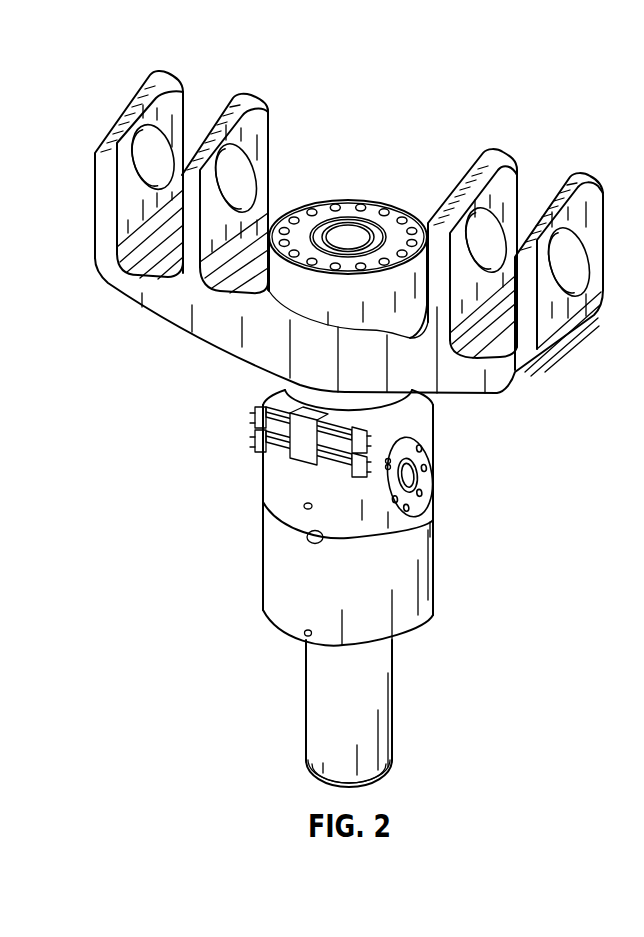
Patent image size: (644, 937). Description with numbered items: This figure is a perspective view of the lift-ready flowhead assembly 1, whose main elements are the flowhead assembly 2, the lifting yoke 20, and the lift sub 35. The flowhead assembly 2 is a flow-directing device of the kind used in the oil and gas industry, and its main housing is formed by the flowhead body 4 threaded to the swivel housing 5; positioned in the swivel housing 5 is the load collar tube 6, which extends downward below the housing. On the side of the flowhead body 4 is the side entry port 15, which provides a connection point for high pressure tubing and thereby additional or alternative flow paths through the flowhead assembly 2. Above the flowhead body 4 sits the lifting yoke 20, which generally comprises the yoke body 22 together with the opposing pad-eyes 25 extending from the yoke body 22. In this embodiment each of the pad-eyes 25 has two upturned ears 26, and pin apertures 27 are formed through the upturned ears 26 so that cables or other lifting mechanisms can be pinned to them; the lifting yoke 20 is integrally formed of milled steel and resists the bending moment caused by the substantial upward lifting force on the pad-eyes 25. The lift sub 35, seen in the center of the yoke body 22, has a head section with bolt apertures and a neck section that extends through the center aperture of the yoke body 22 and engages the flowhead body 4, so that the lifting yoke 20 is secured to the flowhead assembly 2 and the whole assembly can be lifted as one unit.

The lift-ready flowhead assembly 1 is at (472, 472).
The flowhead assembly 2 is at (466, 548).
The flowhead body 4 is at (263, 490).
The swivel housing 5 is at (263, 600).
The load collar tube 6 is at (393, 712).
The side entry port 15 is at (431, 462).
The lifting yoke 20 is at (130, 329).
The yoke body 22 is at (227, 338).
The pad-eyes 25 is at (130, 98).
The upturned ears 26 is at (217, 106).
The pin apertures 27 is at (247, 172).
The lift sub 35 is at (369, 190).